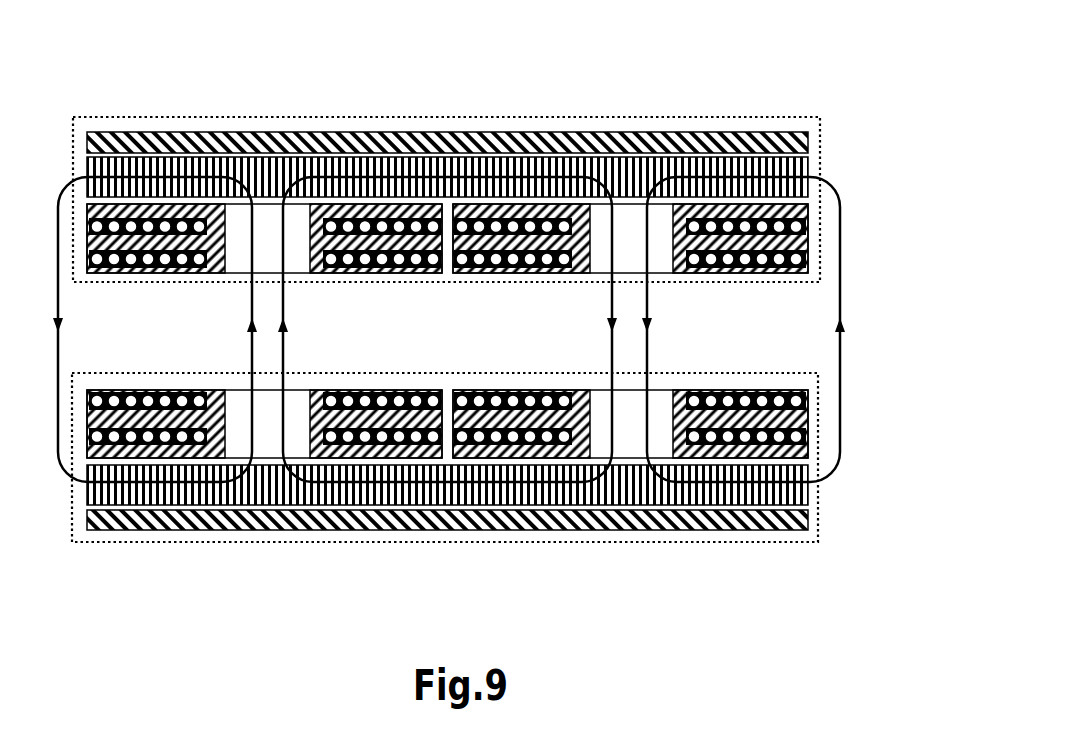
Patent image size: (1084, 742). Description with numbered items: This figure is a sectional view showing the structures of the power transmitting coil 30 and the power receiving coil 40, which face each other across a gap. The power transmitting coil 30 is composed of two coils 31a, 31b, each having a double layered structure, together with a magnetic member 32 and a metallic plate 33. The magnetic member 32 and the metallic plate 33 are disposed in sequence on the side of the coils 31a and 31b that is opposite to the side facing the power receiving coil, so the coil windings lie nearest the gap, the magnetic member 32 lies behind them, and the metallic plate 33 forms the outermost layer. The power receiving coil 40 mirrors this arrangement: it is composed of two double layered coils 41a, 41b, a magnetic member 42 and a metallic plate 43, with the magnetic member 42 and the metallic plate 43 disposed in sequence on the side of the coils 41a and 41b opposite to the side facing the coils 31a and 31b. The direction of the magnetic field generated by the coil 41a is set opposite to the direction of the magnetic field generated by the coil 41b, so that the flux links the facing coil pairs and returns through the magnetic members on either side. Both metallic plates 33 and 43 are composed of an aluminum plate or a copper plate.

The power transmitting coil 30 is at (508, 464).
The coil 31a is at (215, 390).
The coil 31b is at (575, 390).
The magnetic member 32 is at (808, 493).
The metallic plate 33 is at (747, 515).
The power receiving coil 40 is at (498, 207).
The coil 41a is at (320, 273).
The coil 41b is at (682, 273).
The magnetic member 42 is at (808, 162).
The metallic plate 43 is at (693, 137).